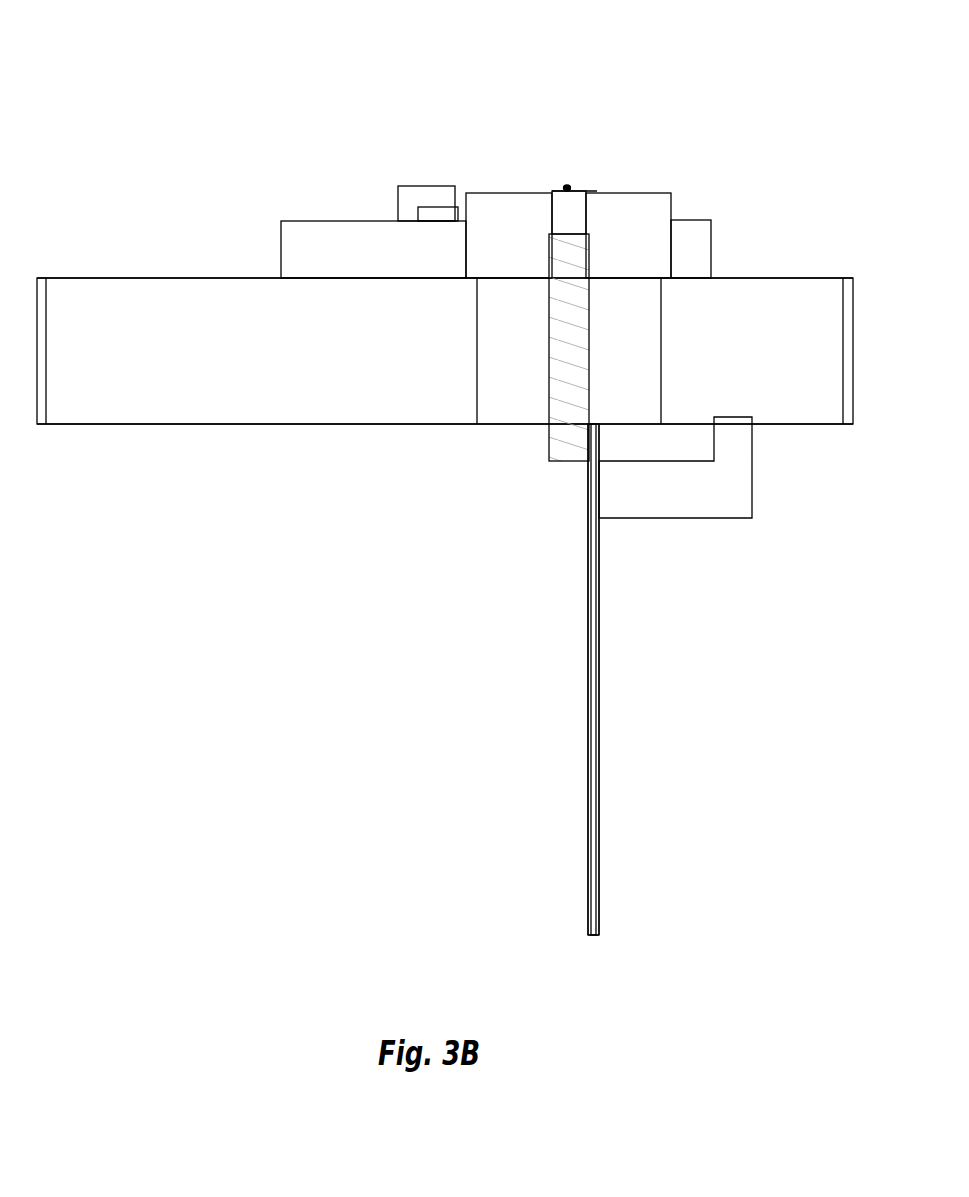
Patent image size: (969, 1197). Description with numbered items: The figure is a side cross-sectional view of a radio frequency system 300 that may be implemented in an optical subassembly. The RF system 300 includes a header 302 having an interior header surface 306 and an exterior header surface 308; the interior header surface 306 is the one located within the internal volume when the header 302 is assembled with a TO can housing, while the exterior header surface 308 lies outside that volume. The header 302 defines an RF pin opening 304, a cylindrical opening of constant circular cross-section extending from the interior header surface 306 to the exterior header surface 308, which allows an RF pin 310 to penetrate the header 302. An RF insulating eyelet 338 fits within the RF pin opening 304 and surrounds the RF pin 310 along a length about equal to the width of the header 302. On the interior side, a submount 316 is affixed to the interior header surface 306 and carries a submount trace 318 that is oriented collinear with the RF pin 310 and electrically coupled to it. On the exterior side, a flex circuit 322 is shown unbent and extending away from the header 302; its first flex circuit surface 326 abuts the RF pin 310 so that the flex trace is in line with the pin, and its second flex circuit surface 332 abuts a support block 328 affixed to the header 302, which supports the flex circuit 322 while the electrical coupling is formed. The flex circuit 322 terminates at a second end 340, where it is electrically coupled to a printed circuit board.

The radio frequency system 300 is at (148, 66).
The header 302 is at (790, 417).
The radio frequency pin opening 304 is at (478, 383).
The interior header surface 306 is at (155, 278).
The exterior header surface 308 is at (155, 424).
The RF pin 310 is at (550, 453).
The submount 316 is at (658, 211).
The submount trace 318 is at (574, 208).
The flex circuit 322 is at (595, 887).
The first flex circuit surface 326 is at (588, 824).
The support block 328 is at (740, 470).
The second flex circuit surface 332 is at (599, 824).
The RF insulating eyelet 338 is at (516, 403).
The second end 340 is at (593, 945).